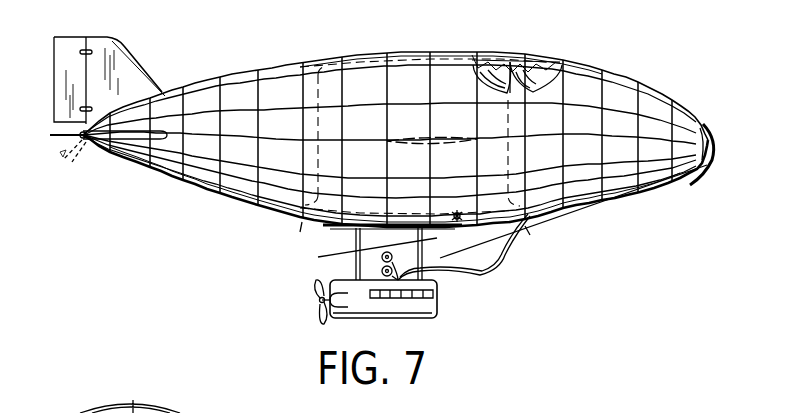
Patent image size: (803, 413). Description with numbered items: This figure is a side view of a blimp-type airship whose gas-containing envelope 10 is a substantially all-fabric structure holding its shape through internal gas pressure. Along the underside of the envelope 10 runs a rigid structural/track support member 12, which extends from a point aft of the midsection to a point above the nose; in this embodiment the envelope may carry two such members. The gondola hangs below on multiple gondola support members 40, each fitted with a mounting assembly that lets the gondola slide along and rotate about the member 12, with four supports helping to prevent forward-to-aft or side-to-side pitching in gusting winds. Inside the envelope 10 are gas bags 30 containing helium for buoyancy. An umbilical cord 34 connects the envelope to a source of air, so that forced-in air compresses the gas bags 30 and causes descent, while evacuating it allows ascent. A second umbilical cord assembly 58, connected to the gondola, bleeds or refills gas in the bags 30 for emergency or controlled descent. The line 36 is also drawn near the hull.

The gas-containing envelope 10 is at (570, 186).
The structural/track support member 12 is at (692, 186).
The gas bags 30 is at (530, 56).
The umbilical cord 34 is at (490, 272).
The mooring line 36 is at (633, 217).
The gondola support member 40 is at (358, 243).
The second umbilical cord assembly 58 is at (447, 236).